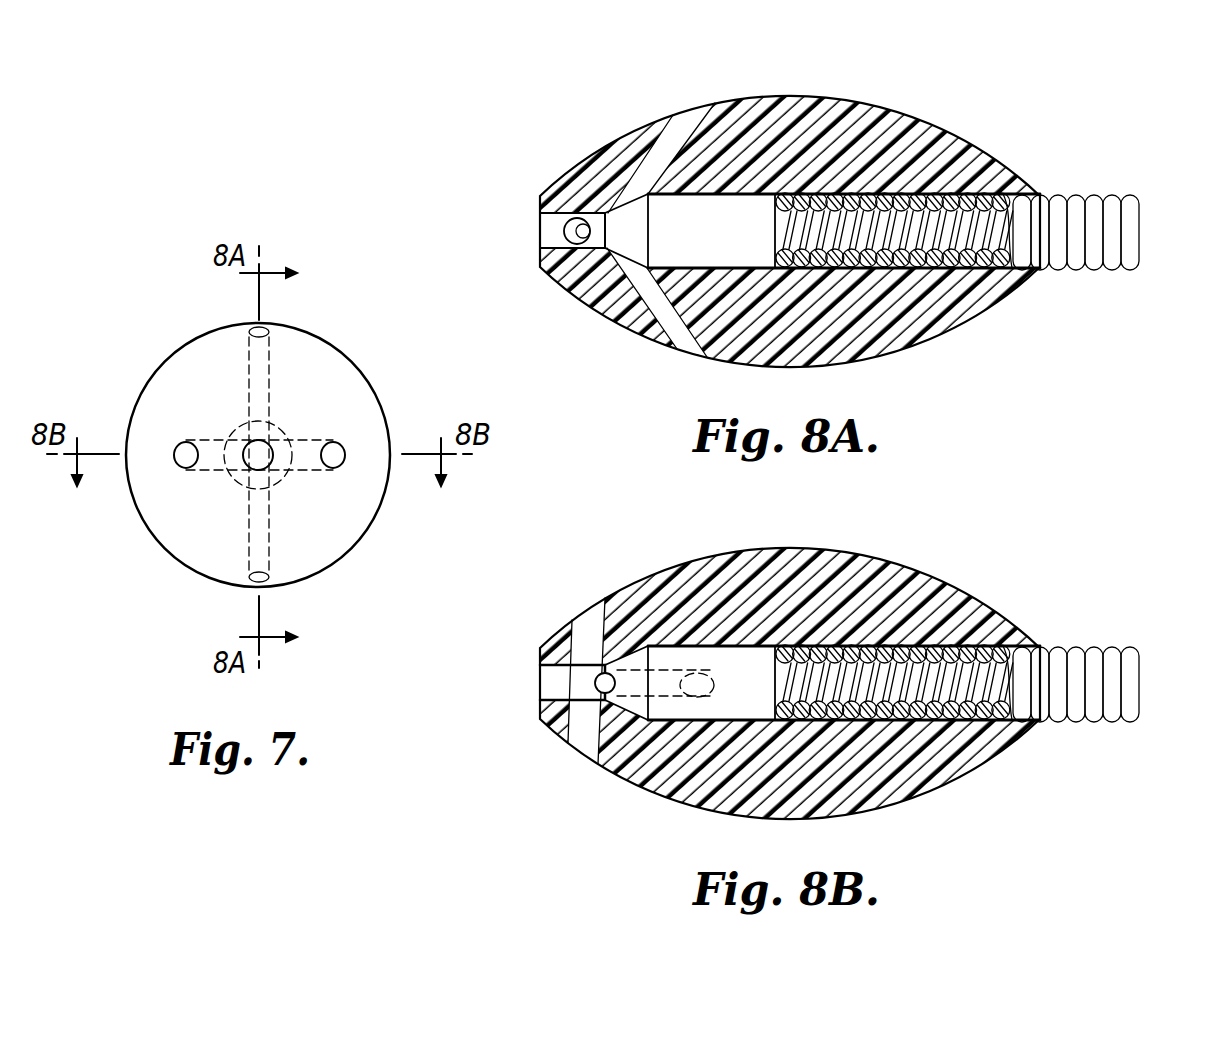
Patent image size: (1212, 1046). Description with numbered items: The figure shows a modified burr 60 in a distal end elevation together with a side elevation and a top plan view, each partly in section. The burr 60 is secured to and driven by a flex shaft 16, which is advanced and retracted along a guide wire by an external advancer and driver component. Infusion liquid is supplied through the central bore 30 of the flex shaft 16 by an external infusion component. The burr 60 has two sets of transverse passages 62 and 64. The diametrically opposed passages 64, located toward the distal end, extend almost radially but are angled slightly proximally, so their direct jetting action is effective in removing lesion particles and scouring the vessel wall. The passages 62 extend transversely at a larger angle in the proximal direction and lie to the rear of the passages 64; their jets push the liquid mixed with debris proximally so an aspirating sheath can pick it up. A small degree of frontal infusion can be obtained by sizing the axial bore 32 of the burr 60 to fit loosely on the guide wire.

In FIG. 8A, the flex shaft 16 is at (1087, 213).
In FIG. 8B, the flex shaft 16 is at (1091, 663).
In FIG. 8A, the central bore 30 is at (1005, 167).
In FIG. 8B, the central bore 30 is at (941, 648).
In FIG. 7, the axial bore 32 is at (252, 446).
In FIG. 8A, the axial bore 32 is at (545, 218).
In FIG. 8B, the axial bore 32 is at (540, 677).
In FIG. 7, the modified burr 60 is at (175, 350).
In FIG. 8A, the modified burr 60 is at (790, 232).
In FIG. 8B, the modified burr 60 is at (790, 658).
In FIG. 7, the transverse passages 62 is at (270, 378).
In FIG. 8A, the transverse passages 62 is at (658, 156).
In FIG. 8B, the transverse passages 62 is at (585, 686).
In FIG. 7, the transverse passages 64 is at (317, 440).
In FIG. 8A, the transverse passages 64 is at (577, 232).
In FIG. 8B, the transverse passages 64 is at (588, 622).